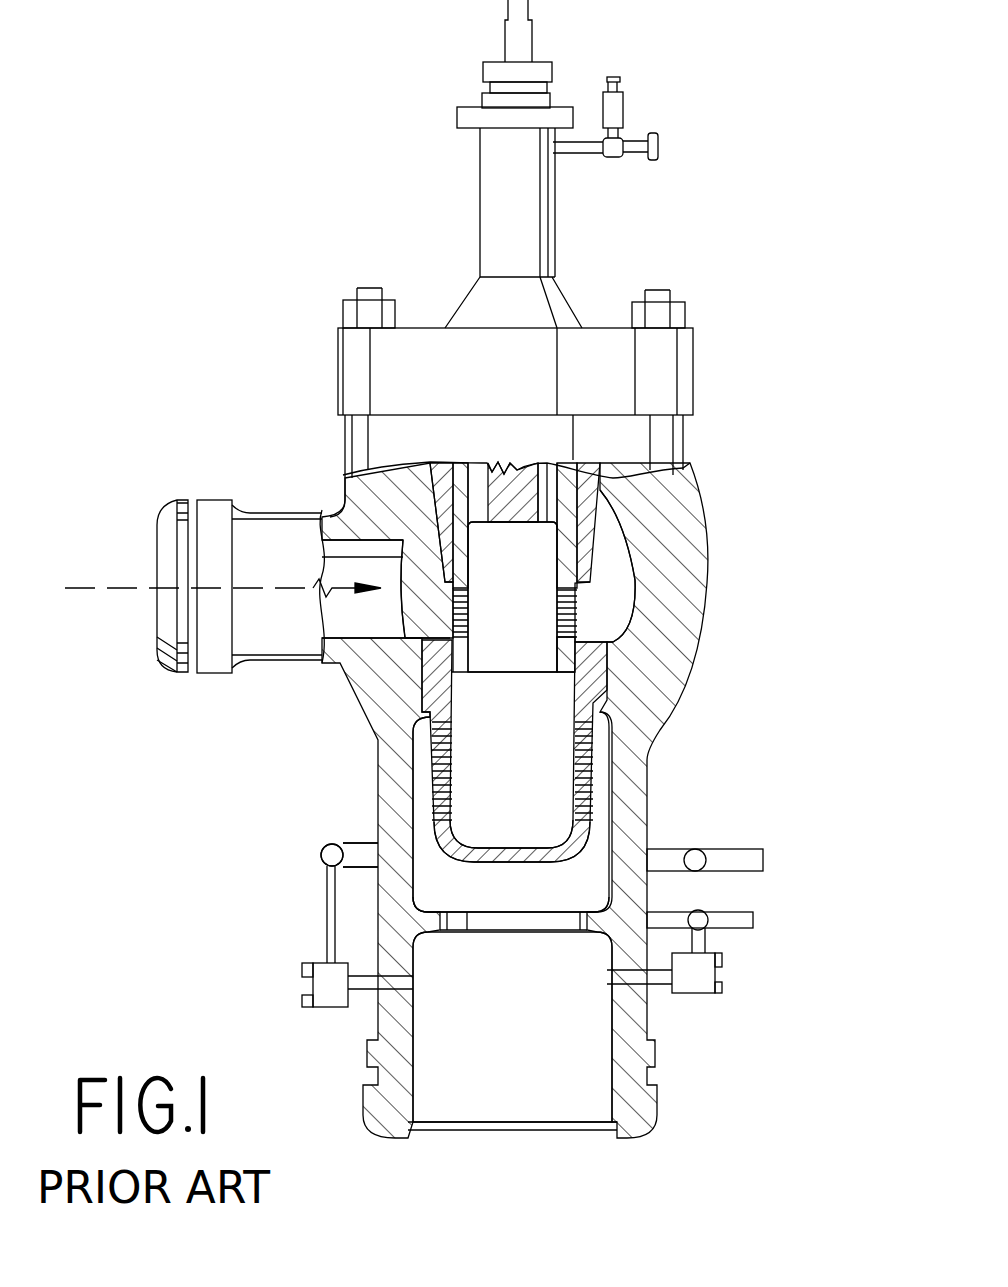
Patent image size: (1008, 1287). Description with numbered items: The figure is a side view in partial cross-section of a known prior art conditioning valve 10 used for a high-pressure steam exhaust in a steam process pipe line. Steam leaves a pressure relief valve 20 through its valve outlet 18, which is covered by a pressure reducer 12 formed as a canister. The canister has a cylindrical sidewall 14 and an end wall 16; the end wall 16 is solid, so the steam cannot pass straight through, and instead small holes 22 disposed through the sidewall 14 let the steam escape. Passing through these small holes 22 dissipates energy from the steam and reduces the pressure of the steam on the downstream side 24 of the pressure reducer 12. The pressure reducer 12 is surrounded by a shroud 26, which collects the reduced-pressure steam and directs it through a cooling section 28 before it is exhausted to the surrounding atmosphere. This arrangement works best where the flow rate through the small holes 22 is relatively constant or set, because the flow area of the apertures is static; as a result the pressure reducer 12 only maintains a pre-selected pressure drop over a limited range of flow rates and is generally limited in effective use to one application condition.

The conditioning valve 10 is at (755, 425).
The pressure reducer 12 is at (606, 773).
The cylindrical sidewall 14 is at (545, 751).
The end wall 16 is at (552, 858).
The valve outlet 18 is at (543, 665).
The pressure relief valve 20 is at (603, 583).
The small holes 22 is at (420, 771).
The downstream side 24 is at (541, 911).
The shroud 26 is at (377, 826).
The cooling section 28 is at (548, 1045).